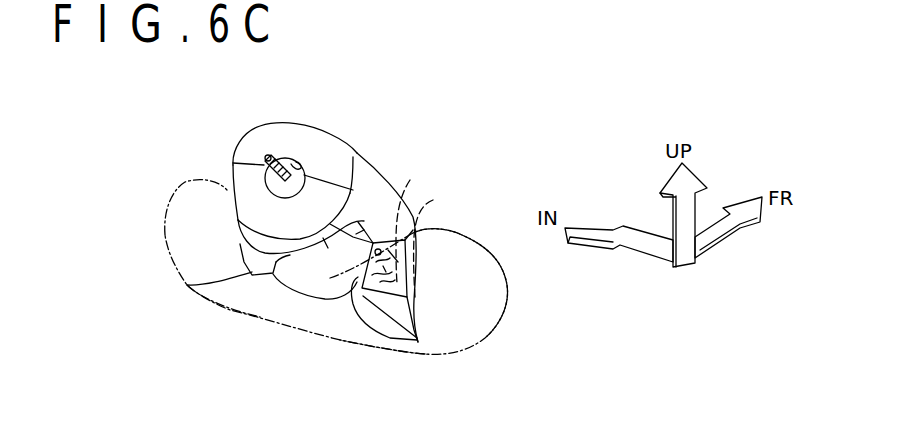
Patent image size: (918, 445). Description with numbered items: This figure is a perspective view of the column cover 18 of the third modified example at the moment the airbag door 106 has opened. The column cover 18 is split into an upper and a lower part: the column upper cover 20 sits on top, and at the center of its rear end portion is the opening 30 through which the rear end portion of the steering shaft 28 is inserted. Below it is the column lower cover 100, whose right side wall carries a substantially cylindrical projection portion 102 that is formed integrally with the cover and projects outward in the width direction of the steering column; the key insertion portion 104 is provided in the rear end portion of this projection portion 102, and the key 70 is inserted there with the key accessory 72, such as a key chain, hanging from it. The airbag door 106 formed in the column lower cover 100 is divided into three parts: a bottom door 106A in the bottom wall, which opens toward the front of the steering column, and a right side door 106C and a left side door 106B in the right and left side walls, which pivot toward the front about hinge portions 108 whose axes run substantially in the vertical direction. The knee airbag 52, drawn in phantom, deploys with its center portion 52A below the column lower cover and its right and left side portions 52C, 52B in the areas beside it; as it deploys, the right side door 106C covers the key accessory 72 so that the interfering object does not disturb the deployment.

The column cover 18 is at (405, 146).
The column upper cover 20 is at (360, 152).
The steering shaft 28 is at (268, 158).
The opening 30 is at (299, 163).
The column lower cover 100 is at (235, 182).
The projection portion 102 is at (419, 242).
The key insertion portion 104 is at (416, 219).
The key 70 is at (365, 262).
The key accessory 72 is at (418, 234).
The knee airbag 52 is at (468, 350).
The center portion 52A is at (277, 320).
The left side portion 52B is at (165, 235).
The right side portion 52C is at (507, 306).
The airbag door 106 is at (333, 316).
The bottom door 106A is at (358, 322).
The left side door 106B is at (187, 285).
The right side door 106C is at (410, 343).
The hinge portions 108 is at (272, 275).